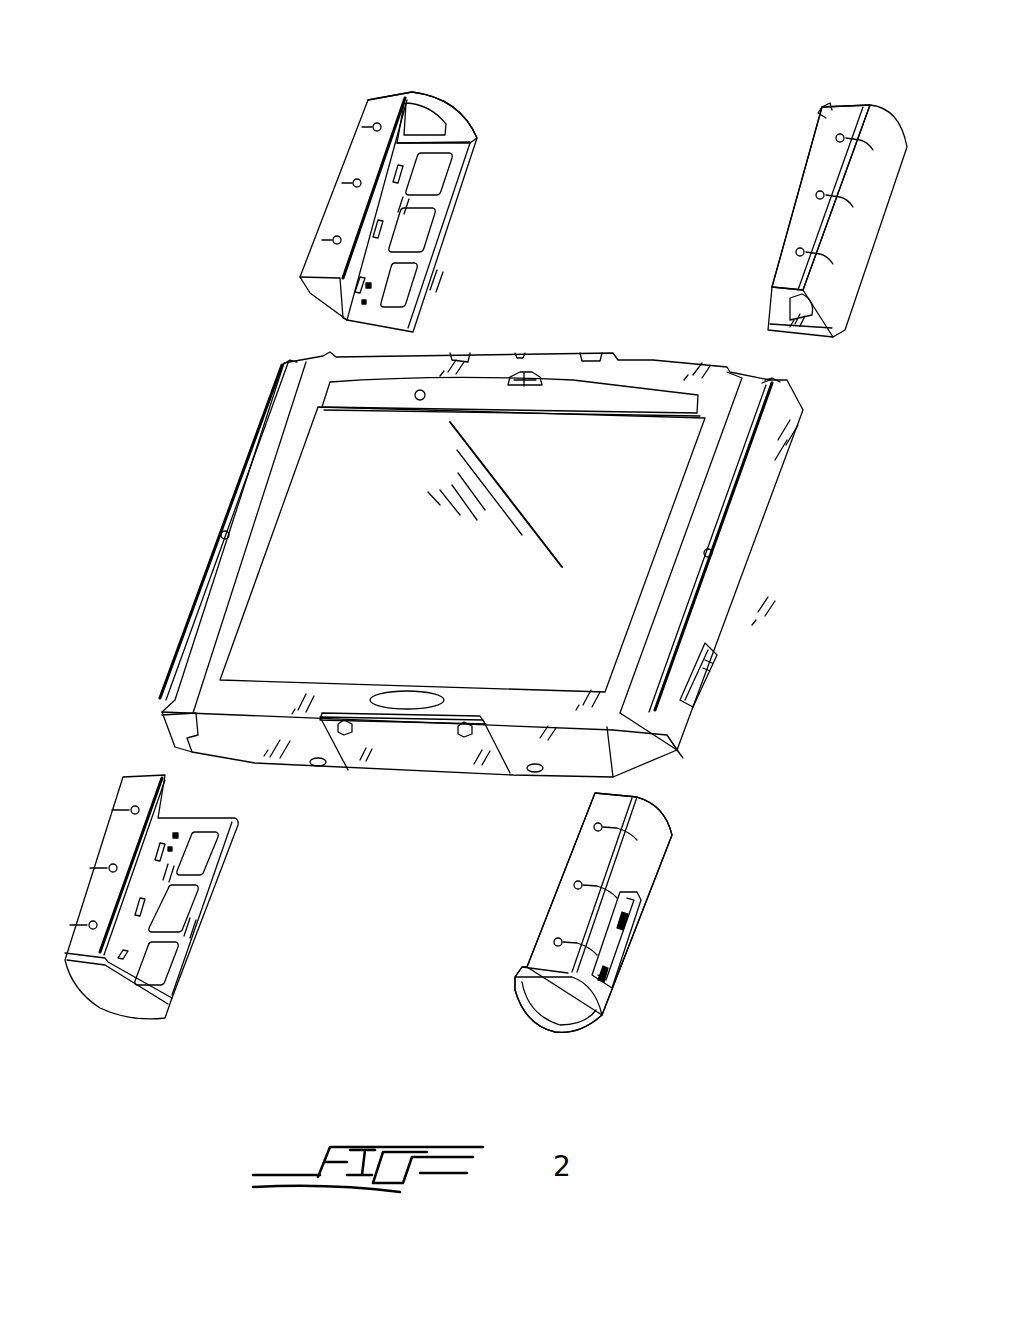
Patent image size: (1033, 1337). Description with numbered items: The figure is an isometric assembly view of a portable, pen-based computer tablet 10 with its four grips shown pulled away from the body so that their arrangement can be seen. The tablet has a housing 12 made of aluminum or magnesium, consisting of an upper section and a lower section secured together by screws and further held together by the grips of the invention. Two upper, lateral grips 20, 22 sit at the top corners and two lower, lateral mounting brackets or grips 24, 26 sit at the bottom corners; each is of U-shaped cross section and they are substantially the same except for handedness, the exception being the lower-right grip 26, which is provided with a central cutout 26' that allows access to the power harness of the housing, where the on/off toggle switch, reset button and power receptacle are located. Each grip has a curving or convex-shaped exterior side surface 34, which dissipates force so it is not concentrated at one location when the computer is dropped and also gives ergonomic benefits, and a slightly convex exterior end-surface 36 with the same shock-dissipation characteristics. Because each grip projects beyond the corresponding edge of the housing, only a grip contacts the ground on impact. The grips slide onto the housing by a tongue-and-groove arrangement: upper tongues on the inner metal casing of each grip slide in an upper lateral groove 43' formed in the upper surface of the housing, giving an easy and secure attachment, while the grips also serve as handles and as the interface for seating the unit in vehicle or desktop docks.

The portable, pen-based computer tablet 10 is at (762, 579).
The housing 12 is at (733, 437).
The upper lateral grip 20 is at (457, 208).
The upper lateral grip 22 is at (860, 230).
The lower lateral mounting bracket or grip 24 is at (130, 993).
The lower-right grip 26 is at (648, 912).
The central cutout 26' is at (716, 815).
The convex-shaped exterior side surface 34 is at (886, 157).
The convex-shaped exterior end-surface 36 is at (450, 108).
The upper lateral groove 43' is at (207, 530).